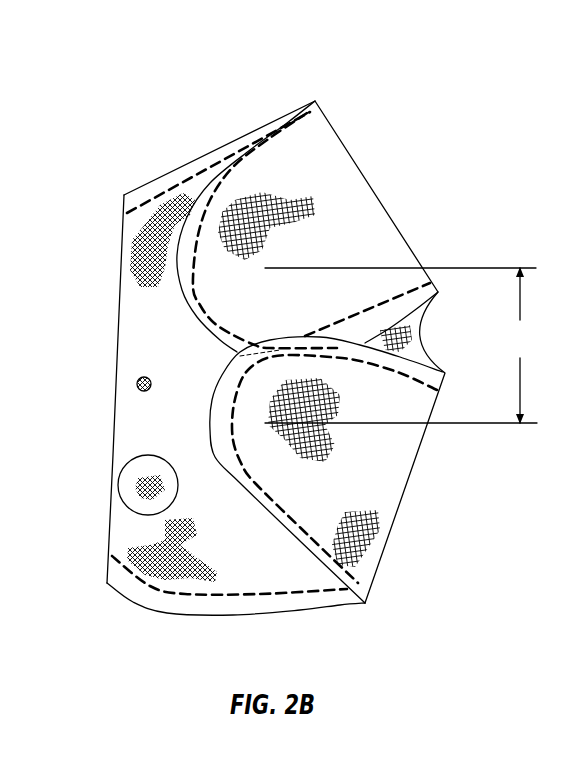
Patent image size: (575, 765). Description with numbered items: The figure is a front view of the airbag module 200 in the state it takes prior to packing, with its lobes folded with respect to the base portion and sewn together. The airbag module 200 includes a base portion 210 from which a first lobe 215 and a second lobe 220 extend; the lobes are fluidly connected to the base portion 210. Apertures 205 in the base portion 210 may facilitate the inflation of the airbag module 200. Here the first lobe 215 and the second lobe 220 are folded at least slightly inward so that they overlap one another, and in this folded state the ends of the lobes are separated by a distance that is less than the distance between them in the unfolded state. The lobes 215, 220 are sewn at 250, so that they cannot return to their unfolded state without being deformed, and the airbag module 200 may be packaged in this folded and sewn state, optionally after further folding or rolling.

The airbag module 200 is at (113, 95).
The apertures 205 is at (141, 391).
The base portion 210 is at (194, 372).
The first lobe 215 is at (313, 243).
The second lobe 220 is at (338, 478).
The sewn location 250 is at (277, 350).